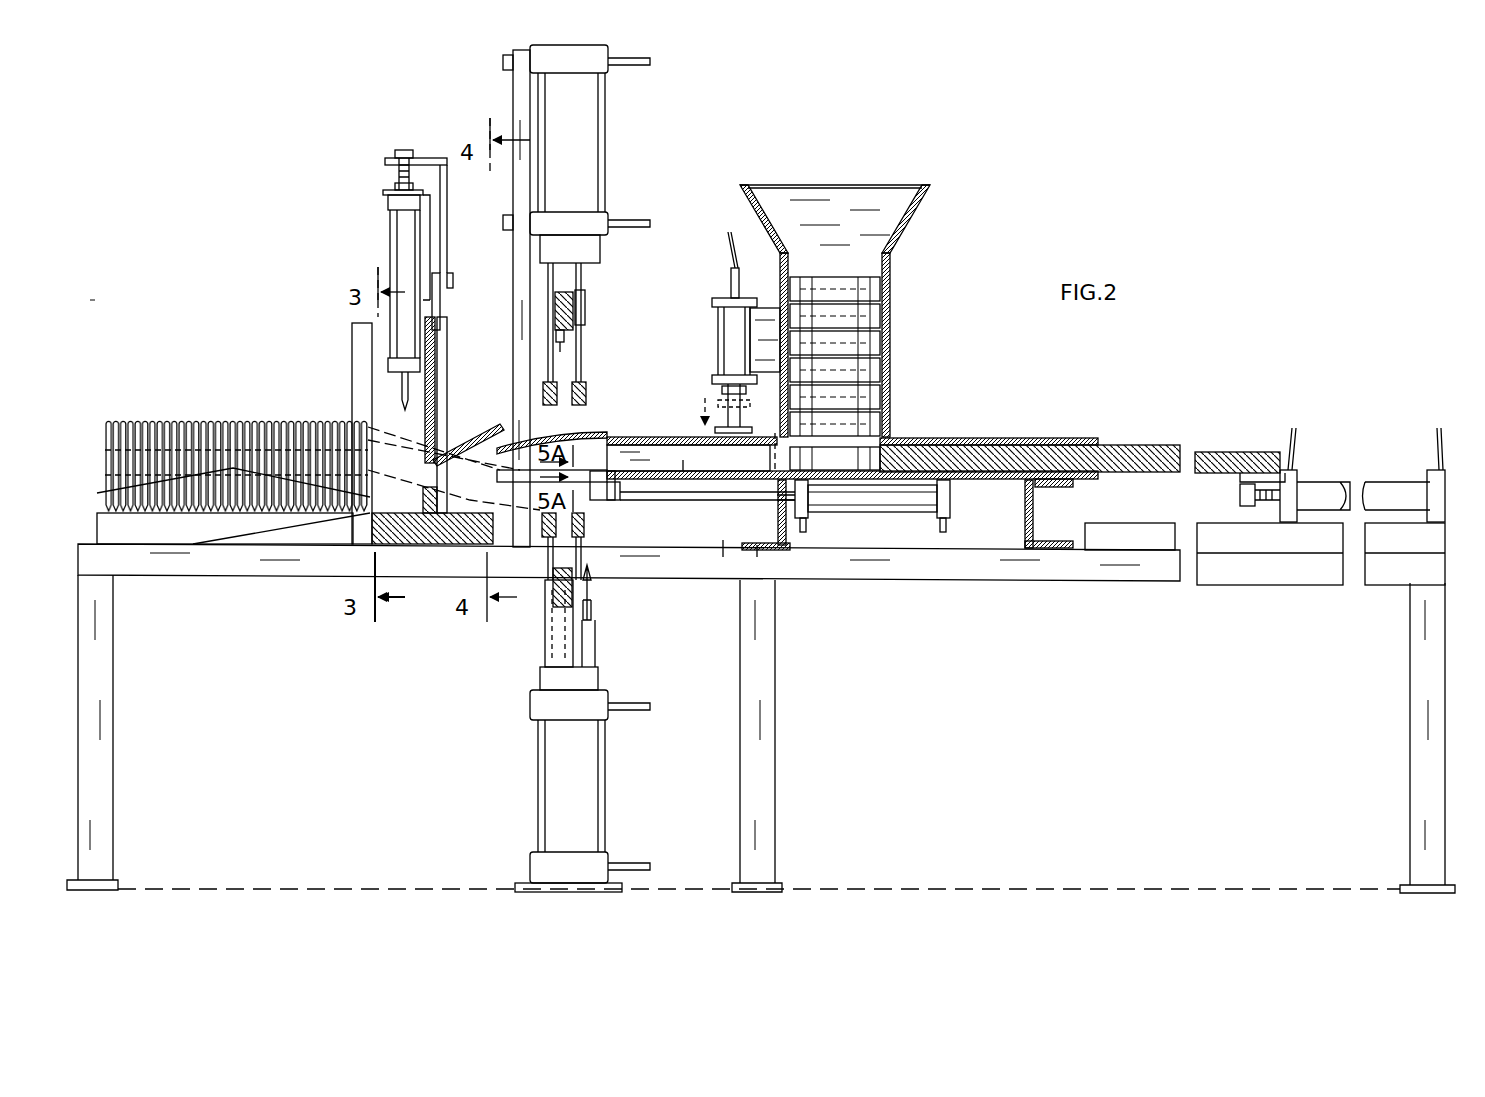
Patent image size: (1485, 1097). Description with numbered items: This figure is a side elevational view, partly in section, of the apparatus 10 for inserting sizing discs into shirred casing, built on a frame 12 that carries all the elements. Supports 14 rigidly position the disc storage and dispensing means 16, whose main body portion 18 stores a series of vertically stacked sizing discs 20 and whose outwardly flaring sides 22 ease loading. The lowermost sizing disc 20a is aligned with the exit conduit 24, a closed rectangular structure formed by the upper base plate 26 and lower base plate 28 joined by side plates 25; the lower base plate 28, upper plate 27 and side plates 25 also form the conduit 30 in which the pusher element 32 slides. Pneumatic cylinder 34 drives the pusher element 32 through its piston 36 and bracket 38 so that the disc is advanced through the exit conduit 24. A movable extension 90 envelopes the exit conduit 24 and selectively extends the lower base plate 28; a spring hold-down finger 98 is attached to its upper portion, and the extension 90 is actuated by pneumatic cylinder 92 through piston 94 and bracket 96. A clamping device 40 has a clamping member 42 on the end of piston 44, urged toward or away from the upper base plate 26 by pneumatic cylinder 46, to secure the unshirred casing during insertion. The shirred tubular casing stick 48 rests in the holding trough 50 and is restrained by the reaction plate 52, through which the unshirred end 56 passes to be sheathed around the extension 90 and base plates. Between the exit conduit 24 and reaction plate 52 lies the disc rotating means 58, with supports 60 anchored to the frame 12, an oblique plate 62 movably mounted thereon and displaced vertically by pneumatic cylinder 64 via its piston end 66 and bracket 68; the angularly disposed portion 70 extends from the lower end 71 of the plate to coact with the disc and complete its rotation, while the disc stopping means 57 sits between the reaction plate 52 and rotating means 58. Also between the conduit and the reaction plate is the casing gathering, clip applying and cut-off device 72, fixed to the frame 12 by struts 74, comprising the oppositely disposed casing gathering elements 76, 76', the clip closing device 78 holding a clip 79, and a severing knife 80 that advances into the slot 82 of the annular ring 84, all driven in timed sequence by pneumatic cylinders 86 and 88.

The apparatus 10 is at (988, 428).
The frame 12 is at (773, 620).
The supports 14 is at (786, 542).
The disc storage and dispensing means 16 is at (851, 327).
The main body portion 18 is at (892, 388).
The sizing discs 20 is at (880, 356).
The lowermost sizing disc 20a is at (886, 437).
The outwardly flaring sides 22 is at (903, 225).
The exit conduit 24 is at (662, 440).
The side plates 25 is at (684, 462).
The upper base plate 26 is at (632, 437).
The upper plate 27 is at (1053, 437).
The lower base plate 28 is at (673, 480).
The conduit 30 is at (1100, 448).
The pusher element 32 is at (1208, 452).
The pneumatic cylinder 34 is at (1392, 482).
The piston 36 is at (1270, 500).
The bracket 38 is at (1260, 482).
The clamping device 40 is at (711, 334).
The clamping member 42 is at (772, 457).
The piston 44 is at (728, 393).
The pneumatic cylinder 46 is at (725, 328).
The shirred tubular casing stick 48 is at (236, 412).
The holding trough 50 is at (165, 530).
The reaction plate 52 is at (352, 365).
The unshirred end 56 is at (762, 561).
The disc stopping means 57 is at (417, 517).
The disc rotating means 58 is at (452, 358).
The supports 60 is at (437, 432).
The oblique plate 62 is at (440, 302).
The pneumatic cylinder 64 is at (400, 234).
The piston end 66 is at (398, 183).
The bracket 68 is at (437, 157).
The angularly disposed portion 70 is at (480, 435).
The lower end 71 is at (425, 470).
The casing gathering, clip applying, cut-off device 72 is at (603, 154).
The struts 74 is at (513, 253).
The casing gathering element 76 is at (550, 334).
The casing gathering element 76' is at (584, 590).
The clip closing device 78 is at (565, 302).
The clip 79 is at (566, 346).
The severing knife 80 is at (592, 585).
The slot 82 is at (572, 326).
The annular ring 84 is at (582, 312).
The pneumatic cylinder 86 is at (597, 115).
The pneumatic cylinder 88 is at (540, 772).
The movable extension 90 is at (497, 478).
The pneumatic cylinder 92 is at (868, 512).
The piston 94 is at (727, 500).
The bracket 96 is at (614, 500).
The spring hold-down finger 98 is at (527, 437).